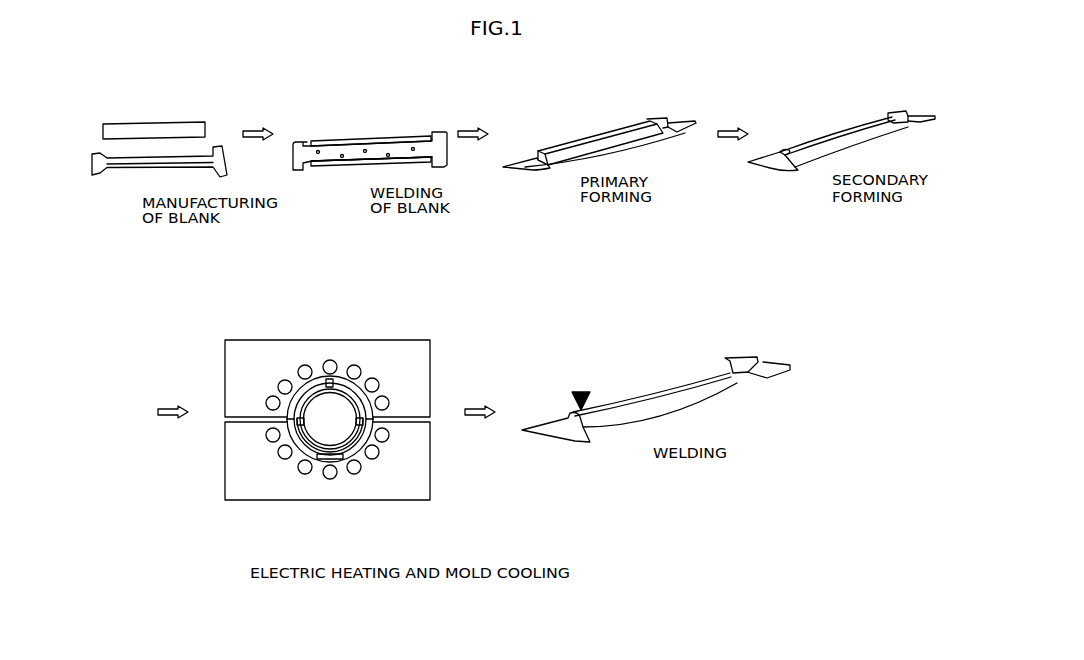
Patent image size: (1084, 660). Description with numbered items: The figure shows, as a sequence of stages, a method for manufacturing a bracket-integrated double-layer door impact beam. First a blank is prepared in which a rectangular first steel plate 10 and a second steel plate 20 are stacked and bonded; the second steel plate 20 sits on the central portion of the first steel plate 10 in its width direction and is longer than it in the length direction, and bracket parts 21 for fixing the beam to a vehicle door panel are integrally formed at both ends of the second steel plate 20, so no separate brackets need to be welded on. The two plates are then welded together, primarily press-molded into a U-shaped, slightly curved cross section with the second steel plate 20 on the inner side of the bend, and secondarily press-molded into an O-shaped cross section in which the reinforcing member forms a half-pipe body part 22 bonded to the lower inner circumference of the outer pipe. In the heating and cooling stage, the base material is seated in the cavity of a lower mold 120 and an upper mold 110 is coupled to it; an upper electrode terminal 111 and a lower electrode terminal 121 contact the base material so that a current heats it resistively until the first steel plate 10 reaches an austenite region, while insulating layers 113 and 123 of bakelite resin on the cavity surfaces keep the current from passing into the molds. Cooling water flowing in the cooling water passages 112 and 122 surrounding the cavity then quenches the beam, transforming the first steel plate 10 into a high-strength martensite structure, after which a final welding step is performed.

The first steel plate 10 is at (143, 132).
The second steel plate 20 is at (72, 247).
The bracket parts 21 is at (93, 170).
The body part 22 is at (120, 167).
The upper mold 110 is at (243, 357).
The upper electrode terminal 111 is at (330, 377).
The cooling water passages 112 is at (303, 368).
The insulating layer 113 is at (357, 385).
The lower mold 120 is at (240, 486).
The lower electrode terminal 121 is at (336, 462).
The cooling water passages 122 is at (307, 467).
The insulating layer 123 is at (300, 450).